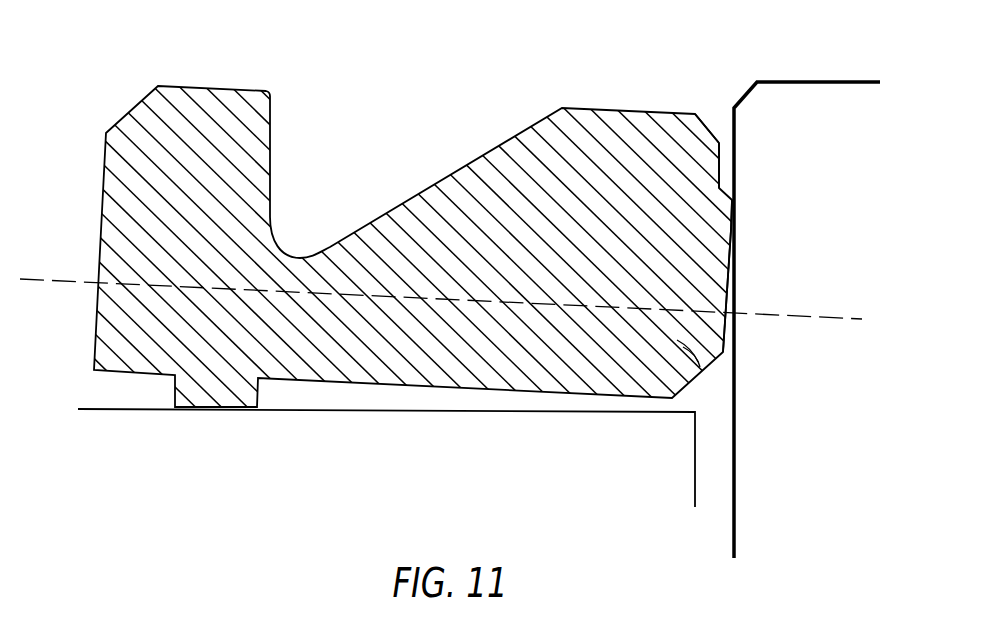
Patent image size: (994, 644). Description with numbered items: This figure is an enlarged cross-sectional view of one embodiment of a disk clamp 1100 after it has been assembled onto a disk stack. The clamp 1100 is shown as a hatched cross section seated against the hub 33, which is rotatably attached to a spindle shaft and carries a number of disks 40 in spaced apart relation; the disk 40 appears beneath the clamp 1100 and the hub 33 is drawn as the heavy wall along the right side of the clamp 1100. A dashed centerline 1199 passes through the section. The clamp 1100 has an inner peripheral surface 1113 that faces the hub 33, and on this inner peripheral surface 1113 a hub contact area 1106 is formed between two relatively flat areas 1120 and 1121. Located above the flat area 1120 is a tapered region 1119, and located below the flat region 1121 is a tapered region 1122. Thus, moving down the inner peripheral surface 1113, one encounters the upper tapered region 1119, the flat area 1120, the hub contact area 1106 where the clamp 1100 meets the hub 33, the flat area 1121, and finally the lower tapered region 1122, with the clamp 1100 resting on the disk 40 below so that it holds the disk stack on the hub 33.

The seal 1100 is at (613, 110).
The hub 33 is at (818, 82).
The tapered region 1119 is at (704, 132).
The flat area 1120 is at (712, 177).
The flat area 1121 is at (731, 224).
The hub contact area 1106 is at (737, 192).
The tapered region 1122 is at (663, 346).
The inner peripheral surface 1113 is at (728, 335).
The centerline 1199 is at (841, 318).
The disk 40 is at (313, 482).